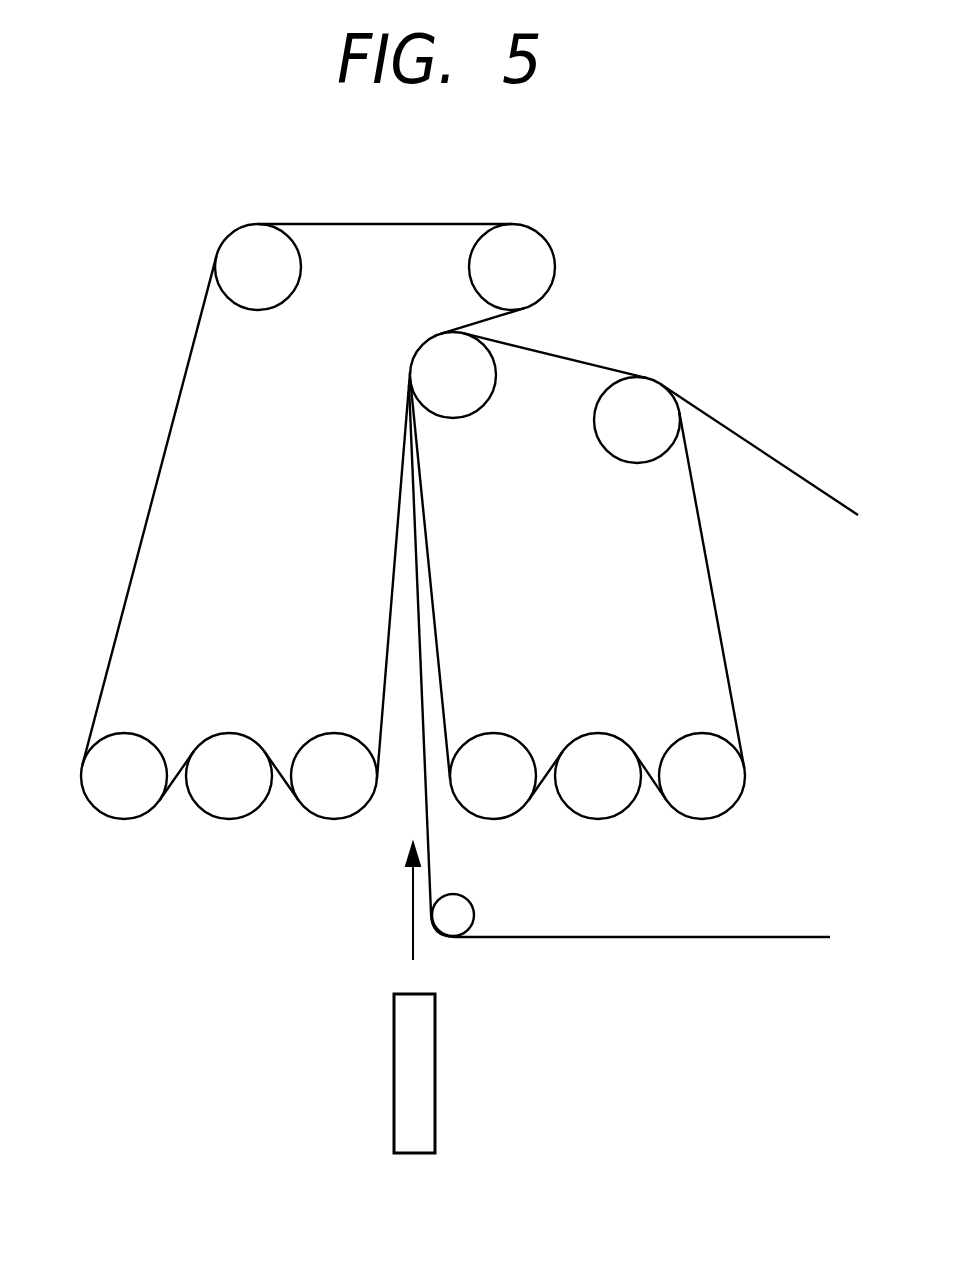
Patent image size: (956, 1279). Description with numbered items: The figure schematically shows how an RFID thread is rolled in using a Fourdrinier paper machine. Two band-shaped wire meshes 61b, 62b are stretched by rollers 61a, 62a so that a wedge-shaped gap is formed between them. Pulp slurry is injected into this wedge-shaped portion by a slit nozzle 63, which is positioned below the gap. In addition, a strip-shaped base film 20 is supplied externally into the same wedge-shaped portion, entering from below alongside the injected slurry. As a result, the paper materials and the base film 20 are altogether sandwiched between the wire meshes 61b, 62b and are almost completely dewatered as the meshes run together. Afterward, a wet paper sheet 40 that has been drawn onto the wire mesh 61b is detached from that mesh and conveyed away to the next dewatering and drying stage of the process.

The base film 20 is at (520, 937).
The wet paper sheet 40 is at (763, 452).
The rollers 61a is at (597, 820).
The wire mesh 61b is at (712, 588).
The rollers 62a is at (210, 818).
The wire mesh 62b is at (128, 590).
The slit nozzle 63 is at (392, 1123).